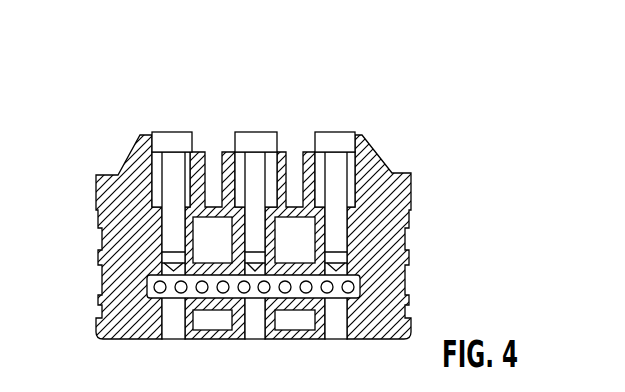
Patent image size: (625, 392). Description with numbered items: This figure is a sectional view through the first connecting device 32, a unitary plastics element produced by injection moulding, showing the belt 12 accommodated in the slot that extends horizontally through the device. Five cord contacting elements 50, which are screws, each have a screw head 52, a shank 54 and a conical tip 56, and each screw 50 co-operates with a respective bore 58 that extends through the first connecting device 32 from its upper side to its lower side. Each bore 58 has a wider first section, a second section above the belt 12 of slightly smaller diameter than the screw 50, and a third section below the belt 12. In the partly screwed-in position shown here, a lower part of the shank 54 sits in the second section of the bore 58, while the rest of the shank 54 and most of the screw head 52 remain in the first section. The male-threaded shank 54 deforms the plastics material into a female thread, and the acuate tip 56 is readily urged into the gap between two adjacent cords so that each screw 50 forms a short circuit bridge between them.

The belt 12 is at (257, 300).
The first connecting device 32 is at (282, 173).
The cord contacting element 50 is at (197, 192).
The screw head 52 is at (170, 142).
The shank 54 is at (170, 227).
The conical tip 56 is at (170, 264).
The bore 58 is at (337, 313).